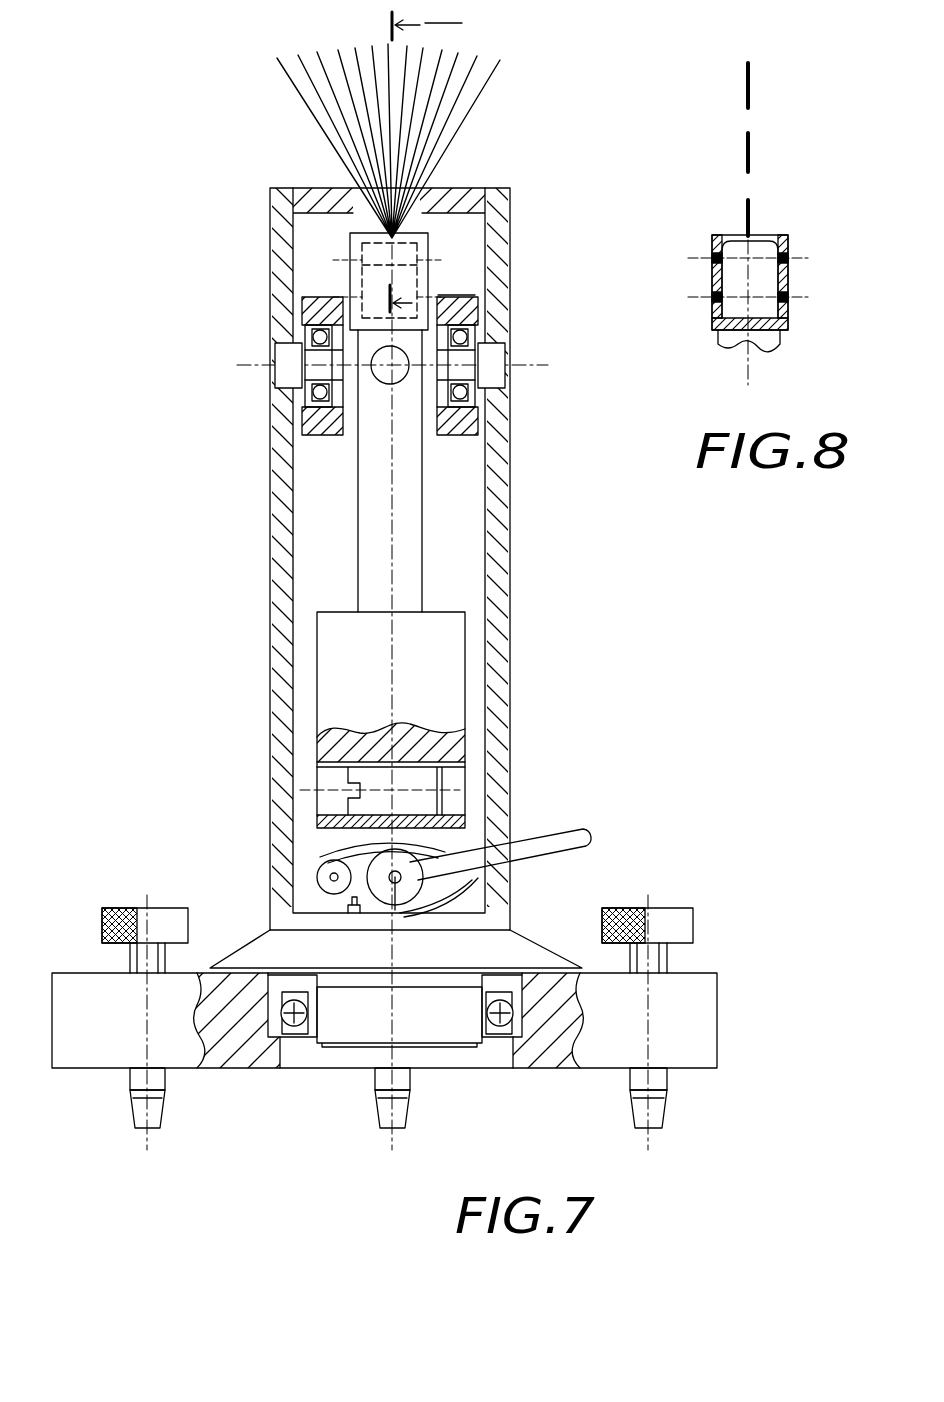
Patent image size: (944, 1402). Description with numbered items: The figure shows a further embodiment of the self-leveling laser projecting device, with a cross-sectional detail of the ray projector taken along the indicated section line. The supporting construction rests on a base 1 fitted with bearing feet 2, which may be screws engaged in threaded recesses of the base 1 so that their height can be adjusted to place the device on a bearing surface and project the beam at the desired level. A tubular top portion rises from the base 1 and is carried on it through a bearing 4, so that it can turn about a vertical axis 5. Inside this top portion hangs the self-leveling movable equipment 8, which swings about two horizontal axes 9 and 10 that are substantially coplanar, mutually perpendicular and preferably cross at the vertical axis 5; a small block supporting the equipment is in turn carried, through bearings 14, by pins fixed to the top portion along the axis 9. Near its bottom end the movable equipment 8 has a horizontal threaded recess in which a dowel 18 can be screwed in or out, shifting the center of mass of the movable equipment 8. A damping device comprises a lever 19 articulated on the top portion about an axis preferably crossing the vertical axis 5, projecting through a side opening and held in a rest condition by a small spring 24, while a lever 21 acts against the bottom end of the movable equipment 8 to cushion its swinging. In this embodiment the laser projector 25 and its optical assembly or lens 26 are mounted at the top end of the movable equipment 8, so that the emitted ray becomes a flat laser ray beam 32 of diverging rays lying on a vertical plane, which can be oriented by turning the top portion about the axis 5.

In FIG. 7, the base 1 is at (697, 1027).
In FIG. 7, the bearing feet 2 is at (137, 907).
In FIG. 7, the bearing 4 is at (305, 1037).
In FIG. 7, the vertical axis 5 is at (395, 692).
In FIG. 7, the self-leveling movable equipment 8 is at (410, 510).
In FIG. 8, the self-leveling movable equipment 8 is at (770, 342).
In FIG. 7, the horizontal axis 9 is at (545, 360).
In FIG. 7, the horizontal axis 10 is at (386, 374).
In FIG. 7, the bearing 14 is at (306, 335).
In FIG. 7, the dowel 18 is at (372, 782).
In FIG. 7, the lever 19 is at (552, 840).
In FIG. 7, the lever 21 is at (330, 852).
In FIG. 7, the small spring 24 is at (420, 893).
In FIG. 7, the projector 25 is at (412, 280).
In FIG. 8, the projector 25 is at (755, 282).
In FIG. 7, the optical assembly or lens 26 is at (497, 213).
In FIG. 7, the laser ray beam 32 is at (398, 85).
In FIG. 8, the laser ray beam 32 is at (752, 158).